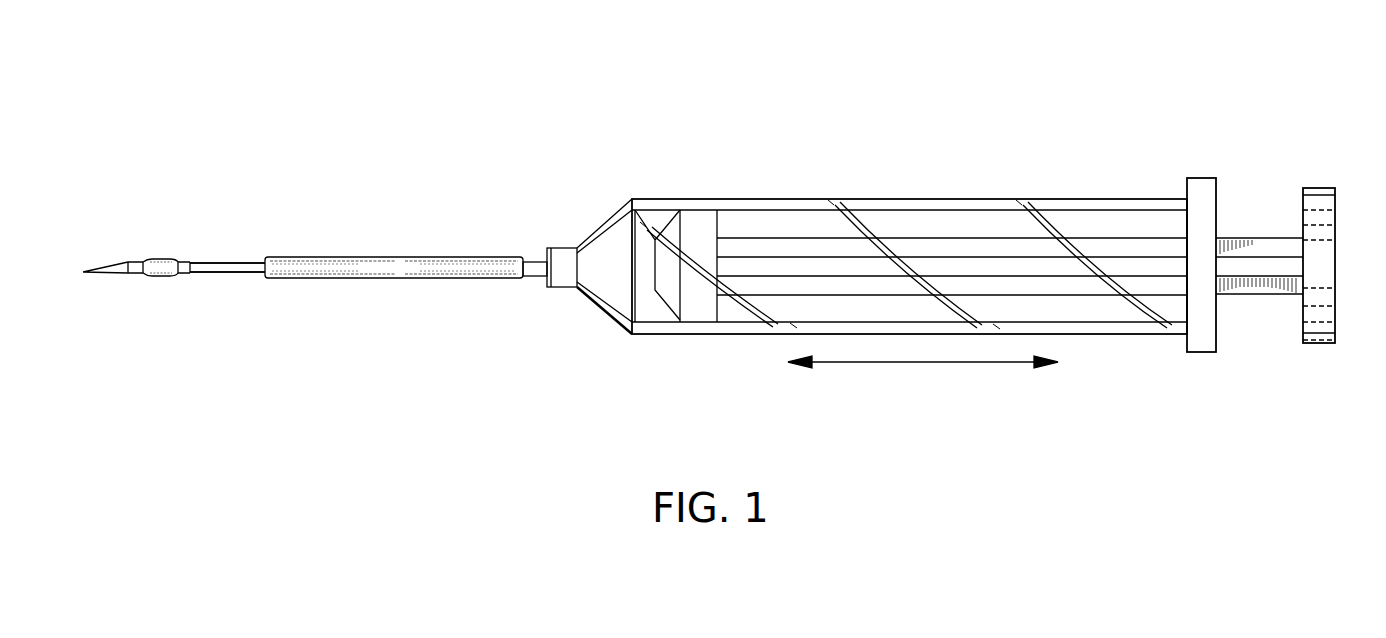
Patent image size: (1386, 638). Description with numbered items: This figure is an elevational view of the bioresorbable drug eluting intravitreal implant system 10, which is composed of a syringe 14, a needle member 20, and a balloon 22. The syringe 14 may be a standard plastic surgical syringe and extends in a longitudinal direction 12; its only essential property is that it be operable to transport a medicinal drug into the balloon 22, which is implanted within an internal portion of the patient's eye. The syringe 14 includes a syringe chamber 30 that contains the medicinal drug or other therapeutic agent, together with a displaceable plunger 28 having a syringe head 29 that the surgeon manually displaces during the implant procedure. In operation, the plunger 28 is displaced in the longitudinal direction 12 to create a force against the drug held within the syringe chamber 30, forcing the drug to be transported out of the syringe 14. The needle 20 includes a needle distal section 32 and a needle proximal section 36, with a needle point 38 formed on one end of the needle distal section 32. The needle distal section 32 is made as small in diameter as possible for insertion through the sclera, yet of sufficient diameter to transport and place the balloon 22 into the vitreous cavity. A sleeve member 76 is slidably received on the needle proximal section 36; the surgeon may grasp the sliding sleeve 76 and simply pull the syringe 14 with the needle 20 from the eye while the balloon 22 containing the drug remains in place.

The implant system 10 is at (1003, 172).
The longitudinal direction 12 is at (922, 364).
The syringe 14 is at (773, 190).
The needle member 20 is at (227, 288).
The balloon 22 is at (163, 252).
The plunger 28 is at (891, 237).
The syringe head 29 is at (1338, 207).
The syringe chamber 30 is at (700, 213).
The needle distal section 32 is at (108, 275).
The needle proximal section 36 is at (228, 258).
The needle point 38 is at (88, 272).
The sleeve member 76 is at (395, 256).